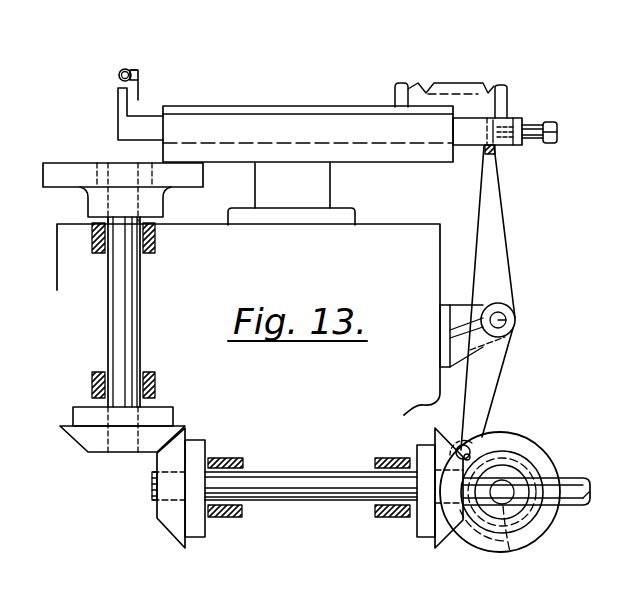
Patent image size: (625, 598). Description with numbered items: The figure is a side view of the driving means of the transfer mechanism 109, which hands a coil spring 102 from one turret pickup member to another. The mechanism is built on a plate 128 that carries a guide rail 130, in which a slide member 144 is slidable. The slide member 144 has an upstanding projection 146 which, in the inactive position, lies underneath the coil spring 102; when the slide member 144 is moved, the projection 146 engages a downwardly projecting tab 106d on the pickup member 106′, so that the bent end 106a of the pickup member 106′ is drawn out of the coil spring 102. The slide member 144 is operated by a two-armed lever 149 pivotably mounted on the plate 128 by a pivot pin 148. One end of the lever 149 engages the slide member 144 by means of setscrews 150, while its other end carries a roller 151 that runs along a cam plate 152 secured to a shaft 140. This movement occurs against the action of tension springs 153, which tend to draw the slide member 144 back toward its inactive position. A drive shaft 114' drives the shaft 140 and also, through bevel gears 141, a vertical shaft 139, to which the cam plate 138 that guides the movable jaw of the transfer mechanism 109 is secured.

The coil spring 102 is at (119, 71).
The bent end 106a is at (136, 69).
The pickup member 106′ is at (140, 74).
The downwardly projecting tab 106d is at (143, 95).
The upstanding projection 146 is at (120, 104).
The cam plate 138 is at (62, 165).
The transfer mechanism 109 is at (307, 101).
The tension springs 153 is at (455, 83).
The setscrews 150 is at (550, 124).
The guide rail 130 is at (368, 162).
The slide member 144 is at (473, 141).
The two-armed lever 149 is at (498, 233).
The pivot pin 148 is at (506, 319).
The plate 128 is at (402, 228).
The vertical shaft 139 is at (130, 313).
The bevel gears 141 is at (165, 460).
The shaft 114' is at (311, 476).
The roller 151 is at (471, 449).
The cam plate 152 is at (557, 458).
The shaft 140 is at (505, 545).